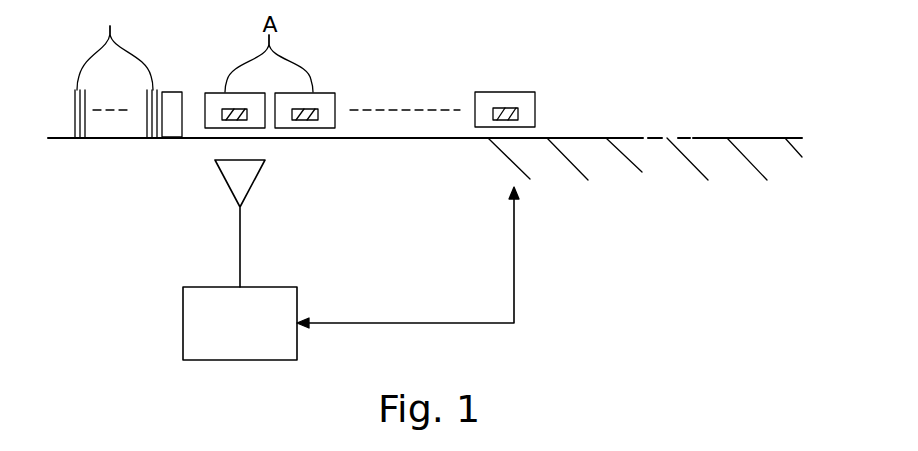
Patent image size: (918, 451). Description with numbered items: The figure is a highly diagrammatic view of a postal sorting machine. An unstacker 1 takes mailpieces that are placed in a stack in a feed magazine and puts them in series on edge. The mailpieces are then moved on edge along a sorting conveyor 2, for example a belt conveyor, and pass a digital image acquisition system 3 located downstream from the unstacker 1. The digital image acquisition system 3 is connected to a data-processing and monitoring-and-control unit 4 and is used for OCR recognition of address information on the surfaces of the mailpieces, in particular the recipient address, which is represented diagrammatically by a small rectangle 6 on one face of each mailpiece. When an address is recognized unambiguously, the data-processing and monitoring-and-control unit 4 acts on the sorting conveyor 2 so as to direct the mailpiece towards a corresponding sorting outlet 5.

The unstacker 1 is at (173, 132).
The sorting conveyor 2 is at (614, 139).
The digital image acquisition system 3 is at (245, 173).
The data-processing and monitoring-and-control unit 4 is at (182, 322).
The sorting outlet 5 is at (730, 138).
The recipient address rectangle 6 is at (317, 118).